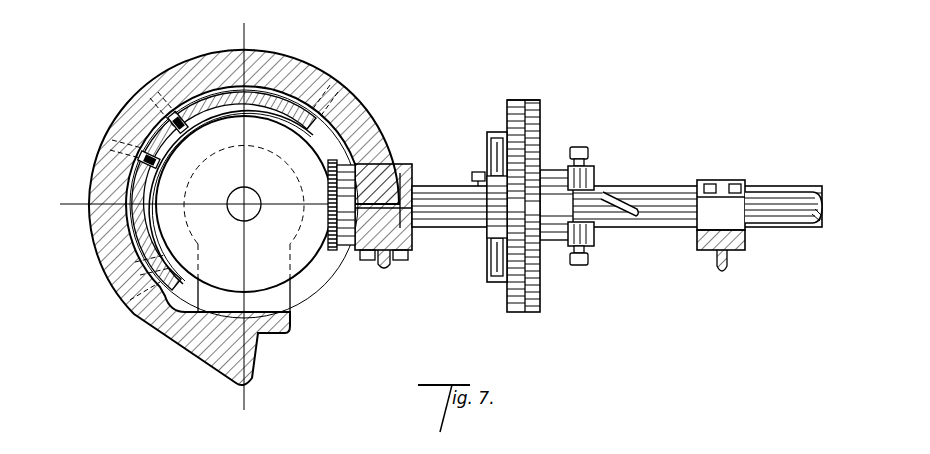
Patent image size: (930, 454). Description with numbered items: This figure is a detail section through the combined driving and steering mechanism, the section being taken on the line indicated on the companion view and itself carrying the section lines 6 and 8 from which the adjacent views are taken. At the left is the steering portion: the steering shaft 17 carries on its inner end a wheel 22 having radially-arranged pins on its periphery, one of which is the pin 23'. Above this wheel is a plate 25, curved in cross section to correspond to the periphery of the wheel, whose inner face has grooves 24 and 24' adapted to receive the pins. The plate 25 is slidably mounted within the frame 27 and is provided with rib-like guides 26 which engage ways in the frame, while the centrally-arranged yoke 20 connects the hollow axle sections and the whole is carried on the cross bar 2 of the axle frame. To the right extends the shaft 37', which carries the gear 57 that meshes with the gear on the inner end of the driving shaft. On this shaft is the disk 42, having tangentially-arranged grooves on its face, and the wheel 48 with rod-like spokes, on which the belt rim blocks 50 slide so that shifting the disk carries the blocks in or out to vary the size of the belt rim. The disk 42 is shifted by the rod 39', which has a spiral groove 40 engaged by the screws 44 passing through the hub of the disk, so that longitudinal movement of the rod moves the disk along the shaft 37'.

The cross bar 2 is at (389, 262).
The axle yoke 6 is at (224, 23).
The spindle 8 is at (55, 172).
The steering shaft 17 is at (258, 197).
The centrally-arranged yoke 20 is at (280, 330).
The wheel 22 is at (304, 268).
The radially-arranged pin 23' is at (231, 197).
The groove 24 is at (164, 96).
The groove 24' is at (119, 143).
The plate 25 is at (281, 96).
The rib-like guide 26 is at (160, 127).
The frame 27 is at (208, 56).
The shaft 37' is at (617, 195).
The rod 39' is at (743, 194).
The spiral groove 40 is at (636, 206).
The disk 42 is at (541, 112).
The screw 44 is at (588, 163).
The wheel 48 is at (508, 106).
The belt rim block 50 is at (491, 160).
The gear 57 is at (332, 245).